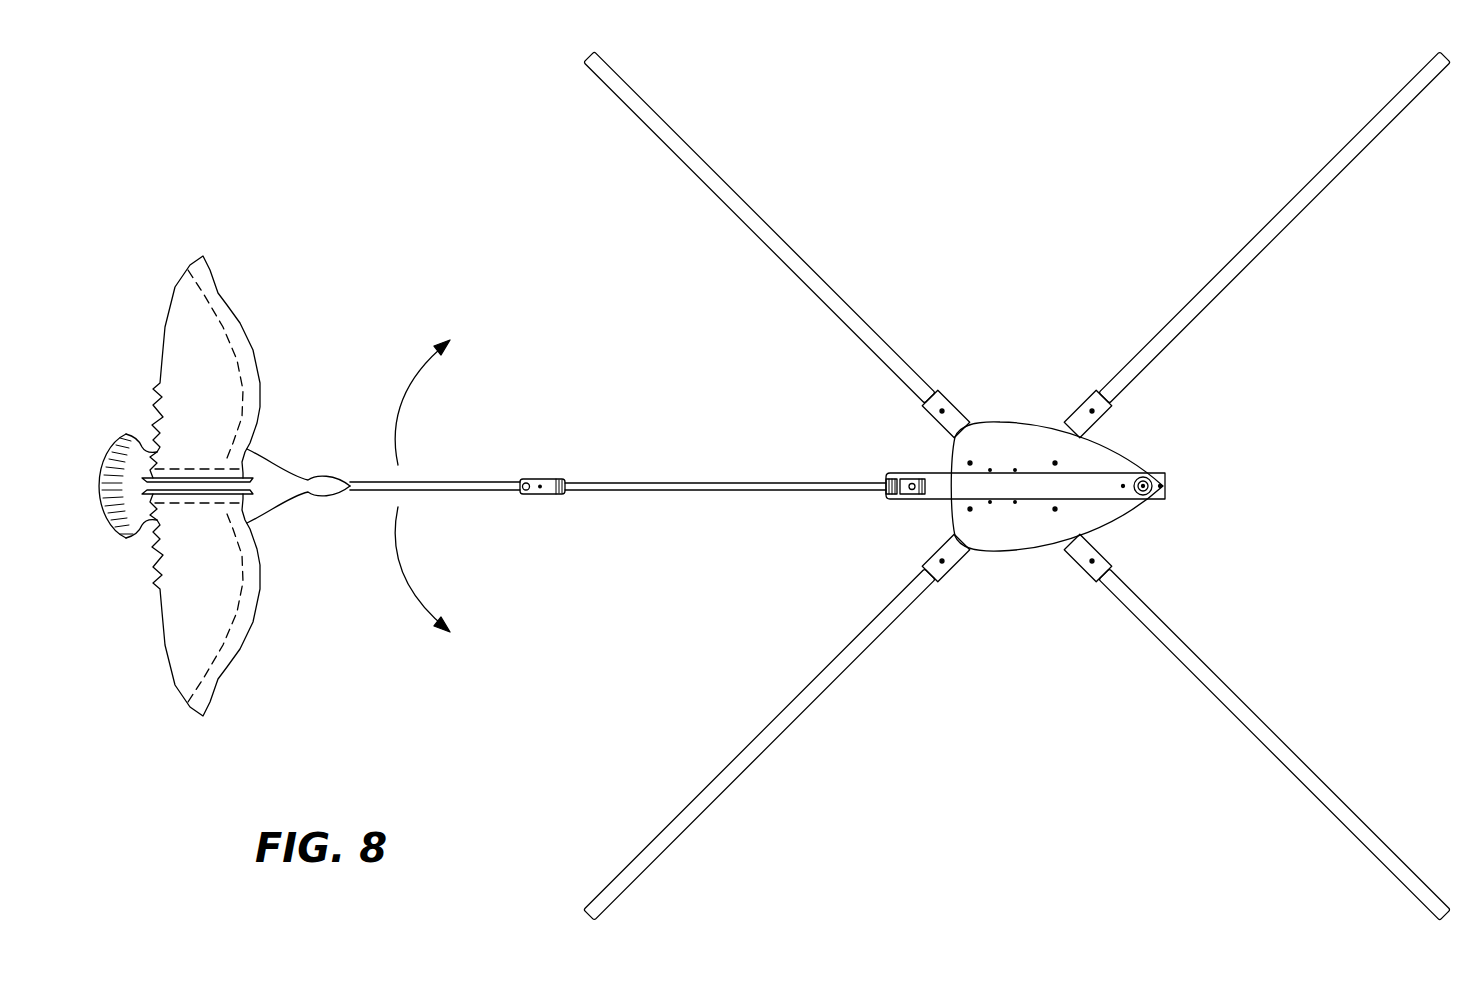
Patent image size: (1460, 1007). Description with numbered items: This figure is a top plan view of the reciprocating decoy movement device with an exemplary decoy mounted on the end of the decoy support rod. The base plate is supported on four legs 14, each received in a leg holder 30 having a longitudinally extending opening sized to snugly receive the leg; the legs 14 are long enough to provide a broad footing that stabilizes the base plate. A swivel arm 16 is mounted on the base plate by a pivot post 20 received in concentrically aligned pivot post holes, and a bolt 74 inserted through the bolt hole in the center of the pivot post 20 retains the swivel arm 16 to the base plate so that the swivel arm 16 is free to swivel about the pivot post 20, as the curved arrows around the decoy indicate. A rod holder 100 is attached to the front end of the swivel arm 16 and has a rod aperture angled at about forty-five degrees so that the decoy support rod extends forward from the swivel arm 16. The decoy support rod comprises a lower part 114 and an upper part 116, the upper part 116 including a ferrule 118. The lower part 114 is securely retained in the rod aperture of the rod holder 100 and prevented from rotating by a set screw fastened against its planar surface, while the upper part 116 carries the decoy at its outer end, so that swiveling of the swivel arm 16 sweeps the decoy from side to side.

The legs 14 is at (846, 304).
The swivel arm 16 is at (1097, 497).
The pivot post 20 is at (1150, 500).
The leg holder 30 is at (952, 402).
The bolt 74 is at (1148, 474).
The rod holder 100 is at (910, 478).
The lower part 114 is at (800, 482).
The upper part 116 is at (442, 482).
The ferrule 118 is at (533, 480).